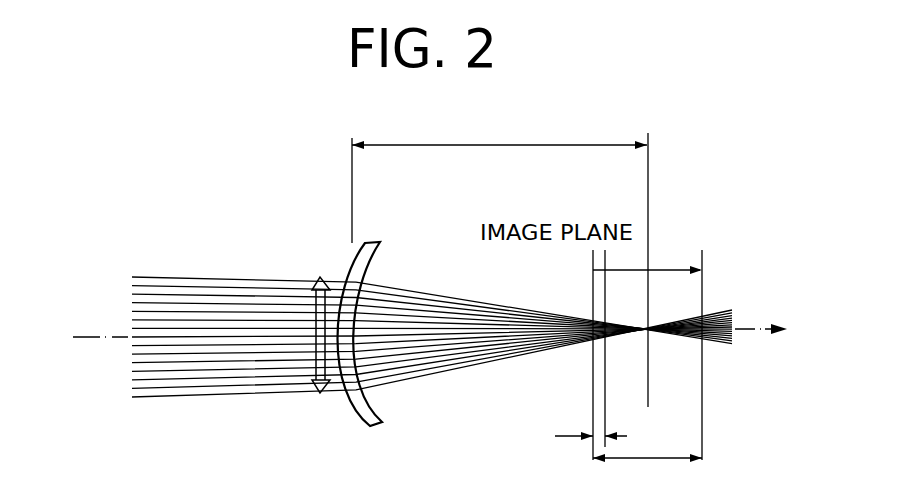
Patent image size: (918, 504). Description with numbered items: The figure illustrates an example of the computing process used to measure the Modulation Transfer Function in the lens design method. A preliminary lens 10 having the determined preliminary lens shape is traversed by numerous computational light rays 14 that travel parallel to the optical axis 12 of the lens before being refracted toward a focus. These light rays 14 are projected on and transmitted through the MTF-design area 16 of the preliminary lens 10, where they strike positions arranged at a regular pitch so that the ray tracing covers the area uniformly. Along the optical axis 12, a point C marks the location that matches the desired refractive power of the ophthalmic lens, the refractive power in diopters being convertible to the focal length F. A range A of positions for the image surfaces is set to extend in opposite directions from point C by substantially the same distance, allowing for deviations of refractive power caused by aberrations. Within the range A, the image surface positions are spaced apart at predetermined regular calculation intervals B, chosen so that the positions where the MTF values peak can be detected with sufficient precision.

The preliminary lens 10 is at (358, 402).
The optical axis 12 is at (112, 348).
The light rays 14 is at (207, 277).
The MTF-design area 16 is at (315, 313).
The focal length F is at (499, 133).
The range of positions for image surfaces A is at (647, 448).
The calculation intervals B is at (591, 426).
The point matching the desired refractive power C is at (662, 337).